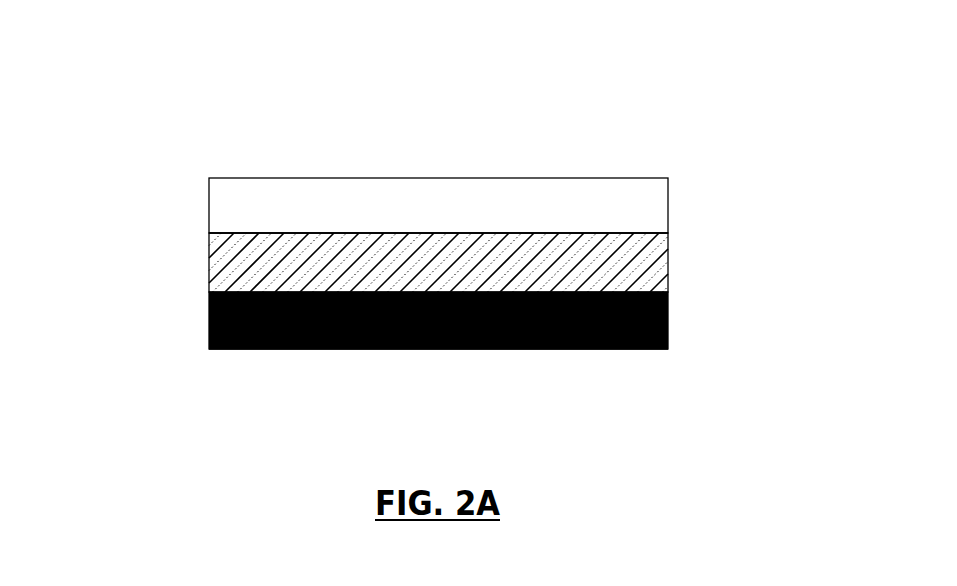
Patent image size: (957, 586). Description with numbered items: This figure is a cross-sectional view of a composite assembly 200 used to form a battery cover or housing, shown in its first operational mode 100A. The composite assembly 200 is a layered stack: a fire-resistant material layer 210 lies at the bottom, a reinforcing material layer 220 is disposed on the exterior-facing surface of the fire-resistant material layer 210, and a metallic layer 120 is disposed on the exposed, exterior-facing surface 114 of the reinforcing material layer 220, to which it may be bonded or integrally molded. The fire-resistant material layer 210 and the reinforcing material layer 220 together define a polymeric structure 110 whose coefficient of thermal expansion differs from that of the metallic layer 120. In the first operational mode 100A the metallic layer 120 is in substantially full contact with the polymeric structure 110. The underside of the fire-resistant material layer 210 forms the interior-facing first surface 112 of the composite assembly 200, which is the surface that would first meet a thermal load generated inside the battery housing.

The first operational mode 100A is at (256, 104).
The composite assembly 200 is at (803, 145).
The metallic layer 120 is at (668, 207).
The exterior-facing surface 114 is at (503, 235).
The polymeric structure 110 is at (202, 228).
The reinforcing material layer 220 is at (668, 263).
The fire-resistant material layer 210 is at (668, 310).
The interior-facing first surface 112 is at (553, 349).